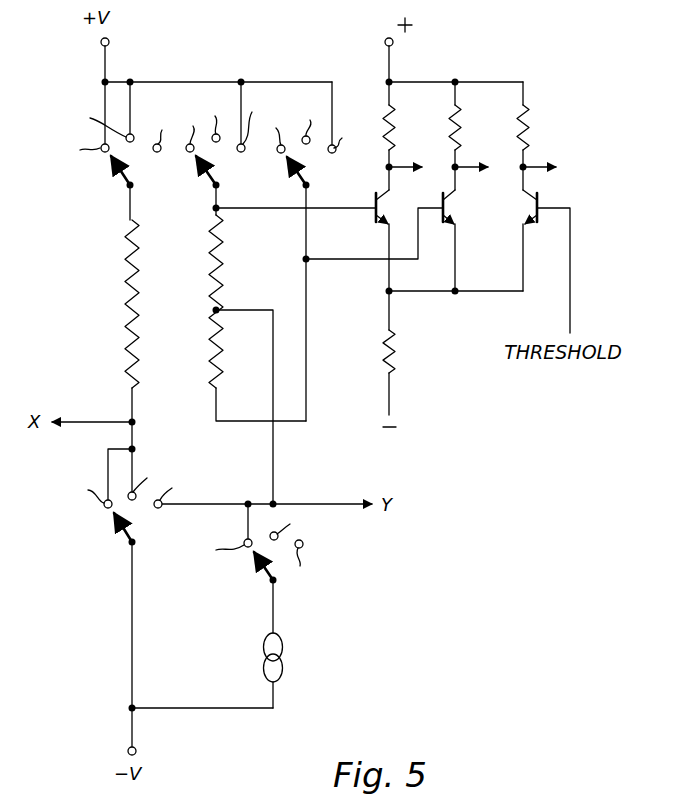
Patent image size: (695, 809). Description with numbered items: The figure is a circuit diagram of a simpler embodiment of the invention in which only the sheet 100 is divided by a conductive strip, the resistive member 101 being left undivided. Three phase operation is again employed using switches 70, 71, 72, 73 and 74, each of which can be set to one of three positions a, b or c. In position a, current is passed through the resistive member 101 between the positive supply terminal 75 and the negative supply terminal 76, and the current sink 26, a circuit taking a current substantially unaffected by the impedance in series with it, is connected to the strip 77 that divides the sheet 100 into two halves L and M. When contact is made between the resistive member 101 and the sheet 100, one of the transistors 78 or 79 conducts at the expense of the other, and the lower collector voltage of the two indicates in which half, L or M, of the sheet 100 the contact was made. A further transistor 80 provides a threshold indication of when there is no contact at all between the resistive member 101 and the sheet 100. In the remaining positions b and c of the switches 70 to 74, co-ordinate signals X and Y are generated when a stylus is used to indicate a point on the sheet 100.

The positive supply terminal 75 is at (110, 42).
The switch 70 is at (110, 178).
The switch 71 is at (198, 182).
The switch 72 is at (290, 176).
The switch 73 is at (114, 534).
The switch 74 is at (256, 574).
The negative supply terminal 76 is at (127, 750).
The strip 77 is at (222, 308).
The transistor 78 is at (377, 211).
The transistor 79 is at (441, 201).
The transistor 80 is at (540, 207).
The sheet 100 is at (222, 243).
The resistive member 101 is at (127, 262).
The current sink 26 is at (283, 645).